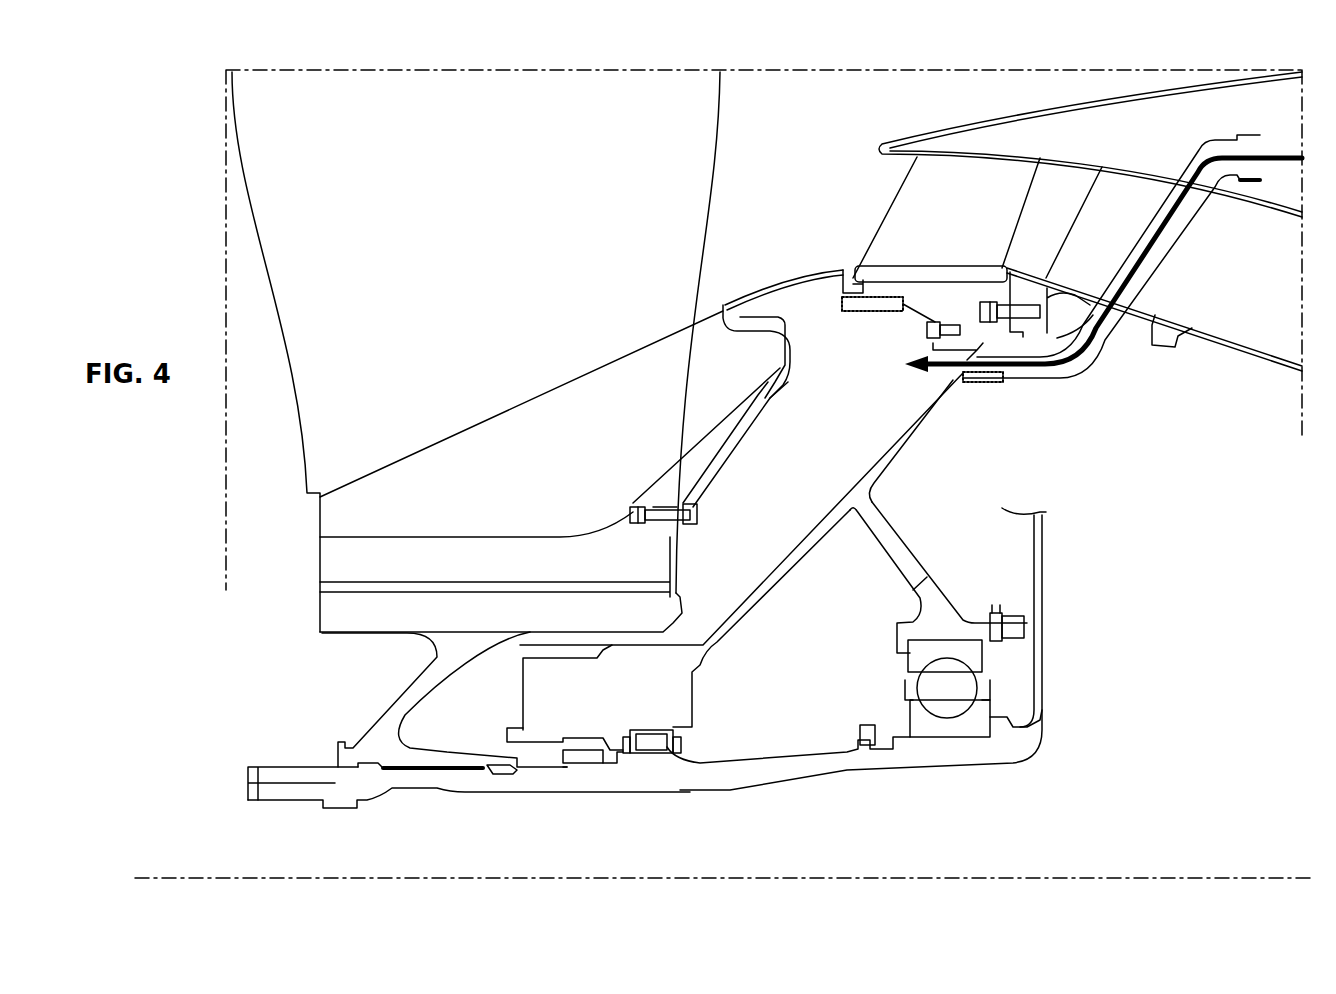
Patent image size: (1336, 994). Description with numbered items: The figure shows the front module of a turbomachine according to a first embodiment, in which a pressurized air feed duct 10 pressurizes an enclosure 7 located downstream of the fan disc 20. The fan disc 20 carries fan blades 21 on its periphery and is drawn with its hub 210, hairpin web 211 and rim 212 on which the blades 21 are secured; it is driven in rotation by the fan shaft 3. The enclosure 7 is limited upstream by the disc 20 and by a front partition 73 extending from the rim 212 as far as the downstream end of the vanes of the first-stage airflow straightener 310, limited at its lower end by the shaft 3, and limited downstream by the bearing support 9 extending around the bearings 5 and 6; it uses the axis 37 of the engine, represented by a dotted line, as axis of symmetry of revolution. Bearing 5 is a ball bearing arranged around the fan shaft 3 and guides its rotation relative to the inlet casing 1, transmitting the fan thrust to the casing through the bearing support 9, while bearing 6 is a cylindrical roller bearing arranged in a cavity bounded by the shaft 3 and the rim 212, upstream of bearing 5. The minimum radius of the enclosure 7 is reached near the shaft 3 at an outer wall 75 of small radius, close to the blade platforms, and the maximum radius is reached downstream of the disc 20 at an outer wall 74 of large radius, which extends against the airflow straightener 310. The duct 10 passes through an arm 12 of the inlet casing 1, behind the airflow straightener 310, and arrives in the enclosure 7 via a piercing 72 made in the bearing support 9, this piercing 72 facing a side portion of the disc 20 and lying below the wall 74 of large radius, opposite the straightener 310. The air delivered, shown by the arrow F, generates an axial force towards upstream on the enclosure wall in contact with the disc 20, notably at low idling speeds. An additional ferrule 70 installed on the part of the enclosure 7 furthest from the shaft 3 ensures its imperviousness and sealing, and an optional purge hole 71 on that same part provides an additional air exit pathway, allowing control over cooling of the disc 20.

The inlet casing 1 is at (1059, 272).
The fan shaft 3 is at (945, 752).
The bearing 5 is at (938, 700).
The bearing 6 is at (645, 748).
The enclosure 7 is at (820, 448).
The bearing support 9 is at (893, 456).
The duct 10 is at (1082, 366).
The arm 12 is at (1108, 376).
The fan disc 20 is at (640, 442).
The fan blades 21 is at (497, 284).
The axis 37 is at (1205, 873).
The ferrule 70 is at (908, 316).
The purge hole 71 is at (824, 308).
The piercing 72 is at (966, 389).
The front partition 73 is at (763, 403).
The outer wall of large radius 74 is at (782, 274).
The outer wall of small radius 75 is at (588, 636).
The hub 210 is at (437, 757).
The hairpin web 211 is at (417, 686).
The rim 212 is at (405, 623).
The first-stage airflow straightener 310 is at (935, 216).